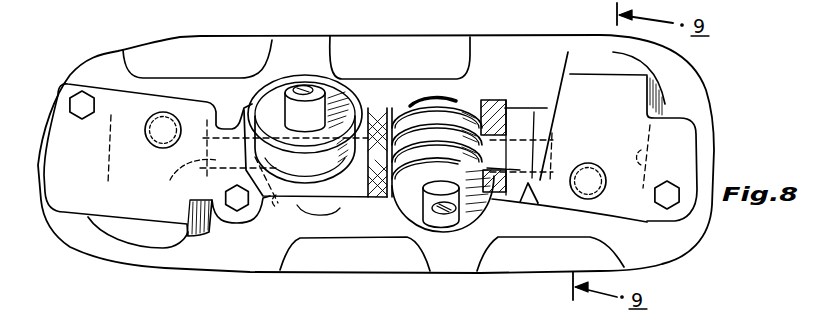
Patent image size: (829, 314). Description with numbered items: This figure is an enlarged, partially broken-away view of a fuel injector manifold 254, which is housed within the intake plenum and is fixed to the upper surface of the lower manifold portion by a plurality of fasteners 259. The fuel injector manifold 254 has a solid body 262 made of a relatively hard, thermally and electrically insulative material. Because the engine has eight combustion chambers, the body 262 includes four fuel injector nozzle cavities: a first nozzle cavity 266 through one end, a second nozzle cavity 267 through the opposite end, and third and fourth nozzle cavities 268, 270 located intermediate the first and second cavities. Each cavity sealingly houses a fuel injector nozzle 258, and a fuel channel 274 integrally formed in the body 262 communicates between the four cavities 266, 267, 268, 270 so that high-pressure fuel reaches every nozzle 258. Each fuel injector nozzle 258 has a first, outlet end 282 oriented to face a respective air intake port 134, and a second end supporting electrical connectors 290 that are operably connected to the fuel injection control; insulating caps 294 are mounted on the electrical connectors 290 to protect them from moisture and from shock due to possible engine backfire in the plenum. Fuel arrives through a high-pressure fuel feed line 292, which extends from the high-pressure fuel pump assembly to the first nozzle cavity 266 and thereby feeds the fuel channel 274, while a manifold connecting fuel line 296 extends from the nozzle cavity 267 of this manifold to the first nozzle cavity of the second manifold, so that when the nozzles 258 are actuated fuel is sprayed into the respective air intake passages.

The air intake port 134 is at (217, 63).
The fuel injector manifold 254 is at (687, 113).
The fuel injector nozzle 258 is at (263, 83).
The fastener 259 is at (82, 97).
The body 262 is at (498, 112).
The first nozzle cavity 266 is at (647, 158).
The second nozzle cavity 267 is at (122, 155).
The third nozzle cavity 268 is at (251, 219).
The fourth nozzle cavity 270 is at (468, 102).
The fuel channel 274 is at (379, 118).
The first, outlet end 282 is at (464, 100).
The electrical connector 290 is at (446, 218).
The high-pressure fuel feed line 292 is at (612, 149).
The insulating cap 294 is at (138, 232).
The manifold connecting fuel line 296 is at (160, 150).